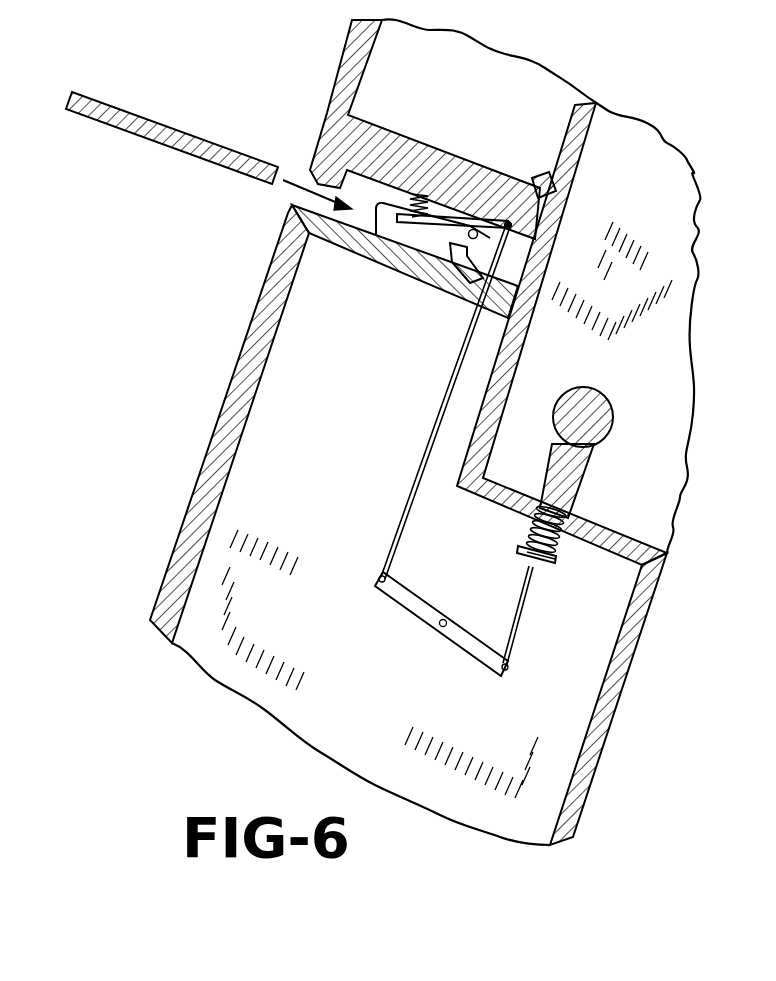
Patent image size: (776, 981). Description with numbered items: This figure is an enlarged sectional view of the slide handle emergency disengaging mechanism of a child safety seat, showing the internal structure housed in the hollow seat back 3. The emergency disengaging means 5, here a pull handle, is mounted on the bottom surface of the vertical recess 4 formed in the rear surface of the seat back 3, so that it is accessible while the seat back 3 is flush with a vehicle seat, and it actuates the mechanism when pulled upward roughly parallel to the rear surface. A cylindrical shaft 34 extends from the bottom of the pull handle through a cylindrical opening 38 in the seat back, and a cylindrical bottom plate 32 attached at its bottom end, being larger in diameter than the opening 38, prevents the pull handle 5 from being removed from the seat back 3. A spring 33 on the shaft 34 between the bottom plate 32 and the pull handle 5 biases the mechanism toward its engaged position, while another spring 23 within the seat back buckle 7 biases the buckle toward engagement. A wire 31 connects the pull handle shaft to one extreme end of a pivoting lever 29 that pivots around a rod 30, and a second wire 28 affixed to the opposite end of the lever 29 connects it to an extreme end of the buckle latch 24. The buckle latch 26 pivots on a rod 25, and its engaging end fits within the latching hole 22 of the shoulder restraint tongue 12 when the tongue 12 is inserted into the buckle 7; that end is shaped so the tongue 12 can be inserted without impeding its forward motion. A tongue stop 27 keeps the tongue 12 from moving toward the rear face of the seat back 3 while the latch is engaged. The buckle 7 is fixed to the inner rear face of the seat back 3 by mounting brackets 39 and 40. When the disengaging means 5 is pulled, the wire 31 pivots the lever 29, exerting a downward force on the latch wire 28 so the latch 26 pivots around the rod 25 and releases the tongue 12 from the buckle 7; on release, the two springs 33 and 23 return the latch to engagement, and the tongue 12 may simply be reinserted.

The seat back 3 is at (217, 470).
The vertical recess 4 is at (657, 217).
The emergency disengaging means 5 is at (593, 413).
The seat back buckle 7 is at (320, 140).
The shoulder restraint tongue 12 is at (152, 122).
The latching hole 22 is at (217, 157).
The spring 23 is at (411, 192).
The buckle latch 24 is at (491, 229).
The rod 25 is at (460, 213).
The buckle latch 26 is at (377, 204).
The tongue stop 27 is at (460, 248).
The second wire 28 is at (410, 503).
The pivoting lever 29 is at (403, 597).
The rod 30 is at (440, 630).
The wire 31 is at (527, 617).
The cylindrical bottom plate 32 is at (523, 550).
The spring 33 is at (567, 540).
The cylindrical shaft 34 is at (527, 537).
The cylindrical opening 38 is at (553, 500).
The mounting bracket 39 is at (556, 167).
The mounting bracket 40 is at (500, 347).